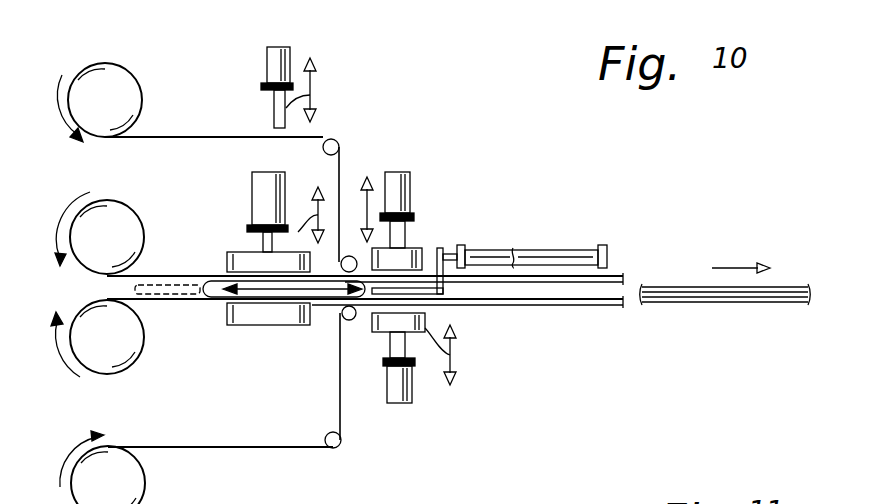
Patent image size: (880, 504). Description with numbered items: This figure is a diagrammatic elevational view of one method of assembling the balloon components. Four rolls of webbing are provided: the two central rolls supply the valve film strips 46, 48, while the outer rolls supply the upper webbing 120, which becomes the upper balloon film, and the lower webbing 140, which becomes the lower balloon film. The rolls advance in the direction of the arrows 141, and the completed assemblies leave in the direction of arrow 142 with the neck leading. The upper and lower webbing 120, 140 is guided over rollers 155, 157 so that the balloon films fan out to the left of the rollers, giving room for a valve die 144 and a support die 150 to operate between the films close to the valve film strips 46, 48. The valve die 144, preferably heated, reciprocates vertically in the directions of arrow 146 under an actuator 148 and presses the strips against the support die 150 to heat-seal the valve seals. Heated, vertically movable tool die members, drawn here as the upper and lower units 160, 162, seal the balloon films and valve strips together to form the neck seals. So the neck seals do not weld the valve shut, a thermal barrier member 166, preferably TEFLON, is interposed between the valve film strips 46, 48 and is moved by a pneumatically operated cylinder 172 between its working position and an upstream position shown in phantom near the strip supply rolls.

The valve film strip 46 is at (200, 301).
The valve film strip 48 is at (210, 299).
The upper webbing 120 is at (188, 137).
The lower webbing 140 is at (208, 446).
The arrows 141 is at (60, 133).
The arrow 142 is at (722, 287).
The valve die 144 is at (235, 251).
The arrow 146 is at (335, 202).
The actuator 148 is at (293, 47).
The support die 150 is at (255, 324).
The roller 155 is at (356, 264).
The roller 157 is at (341, 319).
The cylinder 160 is at (412, 173).
The lower cylinder 162 is at (383, 333).
The barrier member 166 is at (160, 285).
The pneumatically operated cylinder 172 is at (557, 249).